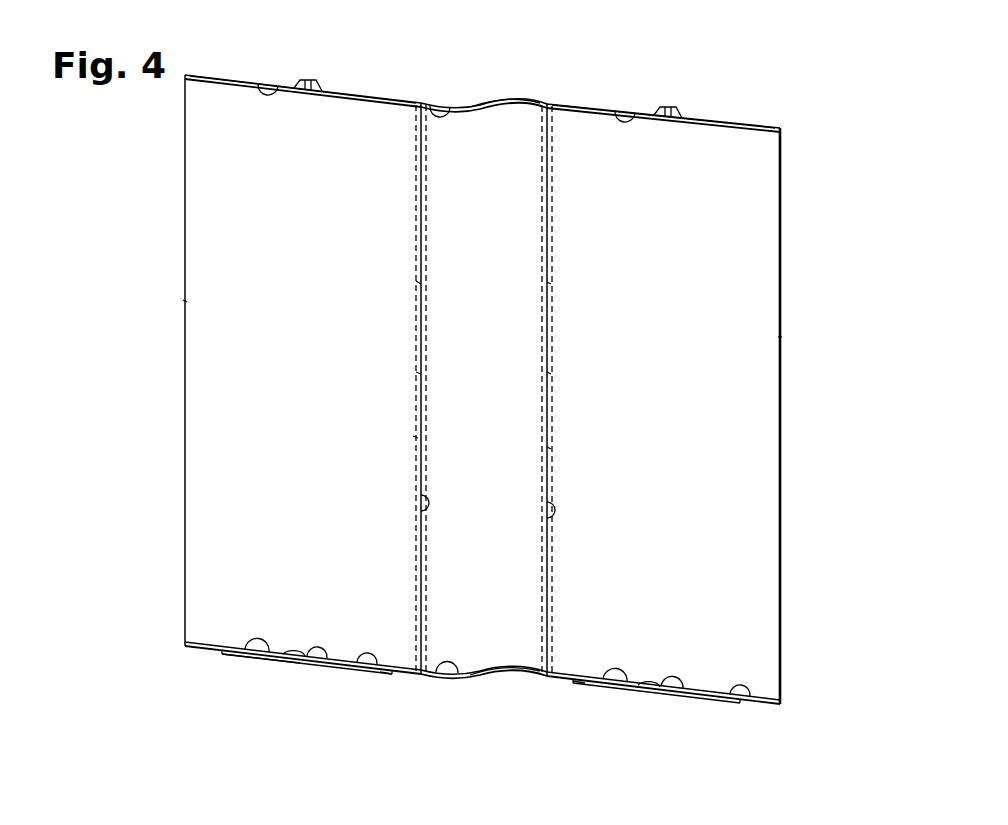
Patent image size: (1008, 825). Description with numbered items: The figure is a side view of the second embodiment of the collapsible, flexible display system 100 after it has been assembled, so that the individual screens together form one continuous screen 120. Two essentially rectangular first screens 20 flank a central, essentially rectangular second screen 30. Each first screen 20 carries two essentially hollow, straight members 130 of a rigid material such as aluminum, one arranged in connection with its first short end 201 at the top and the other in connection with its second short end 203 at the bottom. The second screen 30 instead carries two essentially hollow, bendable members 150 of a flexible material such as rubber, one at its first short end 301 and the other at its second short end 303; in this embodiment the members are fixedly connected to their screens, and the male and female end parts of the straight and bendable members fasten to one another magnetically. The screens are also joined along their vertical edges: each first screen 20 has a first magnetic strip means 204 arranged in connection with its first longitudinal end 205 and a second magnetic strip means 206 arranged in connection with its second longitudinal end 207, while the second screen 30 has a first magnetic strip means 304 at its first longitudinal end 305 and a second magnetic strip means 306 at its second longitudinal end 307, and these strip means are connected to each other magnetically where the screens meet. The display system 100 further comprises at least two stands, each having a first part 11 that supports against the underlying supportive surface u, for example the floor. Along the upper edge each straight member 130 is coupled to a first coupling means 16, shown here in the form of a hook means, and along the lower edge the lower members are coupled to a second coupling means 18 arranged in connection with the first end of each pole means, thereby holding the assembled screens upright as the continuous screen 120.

The display system 100 is at (803, 169).
The continuous screen 120 is at (168, 209).
The first screen 20 is at (310, 197).
The second screen 30 is at (503, 191).
The bendable member 150 is at (502, 97).
The first short end of the second screen 301 is at (437, 103).
The second short end of the second screen 303 is at (440, 676).
The first coupling means 16 is at (303, 82).
The first short end of the first screen 201 is at (265, 85).
The second short end of the first screen 203 is at (245, 656).
The second coupling means 18 is at (322, 670).
The straight member 130 is at (373, 96).
The first part 11 is at (385, 673).
The underlying supportive surface u is at (240, 657).
The second longitudinal end of the first screen 207 is at (418, 283).
The first longitudinal end of the first screen 205 is at (183, 301).
The first longitudinal end of the second screen 305 is at (418, 373).
The second longitudinal end of the second screen 307 is at (549, 373).
The second magnetic strip means 206 is at (415, 437).
The first magnetic strip means 204 is at (549, 448).
The first magnetic strip means of the second screen 304 is at (421, 511).
The second magnetic strip means of the second screen 306 is at (549, 518).